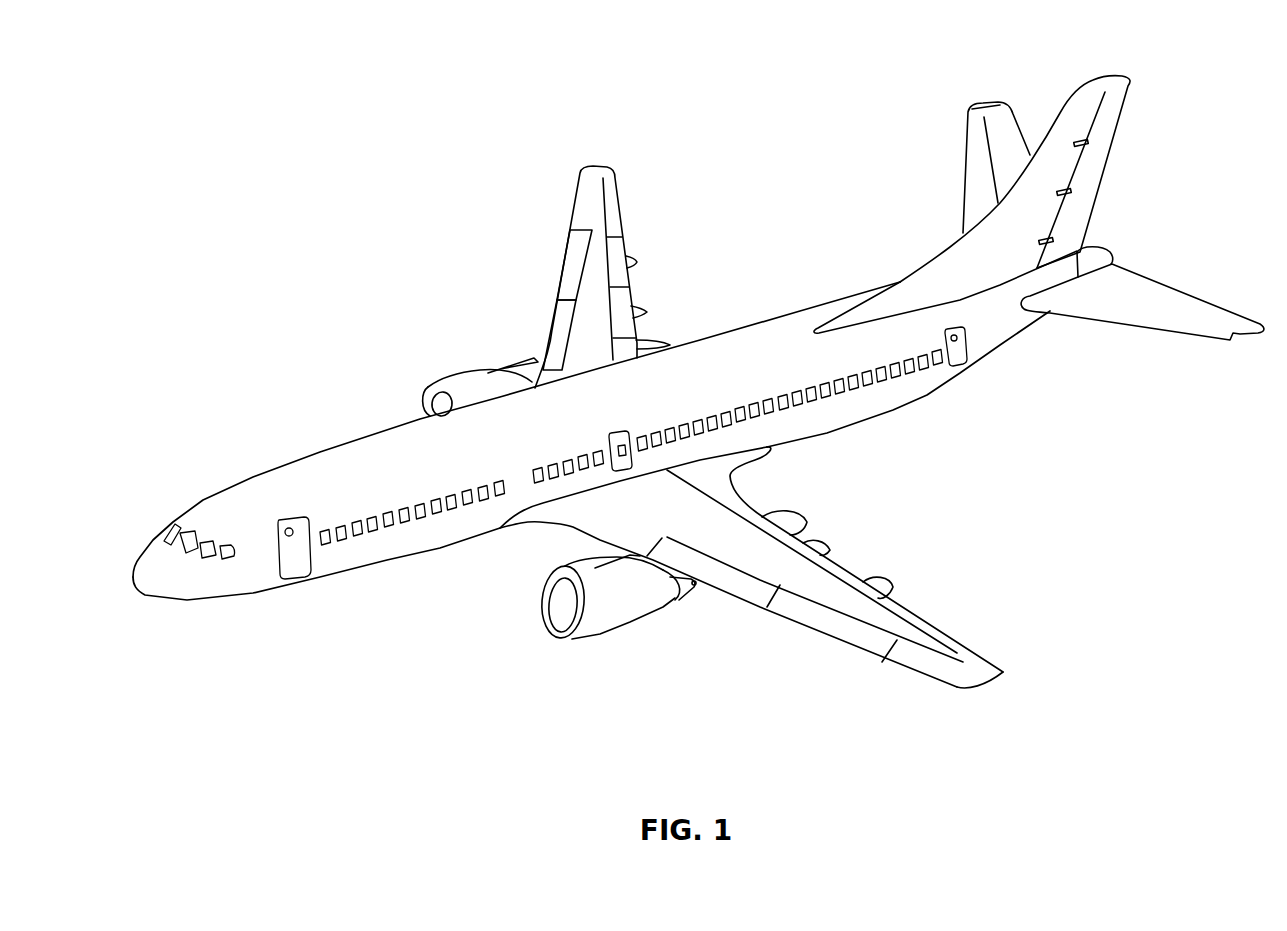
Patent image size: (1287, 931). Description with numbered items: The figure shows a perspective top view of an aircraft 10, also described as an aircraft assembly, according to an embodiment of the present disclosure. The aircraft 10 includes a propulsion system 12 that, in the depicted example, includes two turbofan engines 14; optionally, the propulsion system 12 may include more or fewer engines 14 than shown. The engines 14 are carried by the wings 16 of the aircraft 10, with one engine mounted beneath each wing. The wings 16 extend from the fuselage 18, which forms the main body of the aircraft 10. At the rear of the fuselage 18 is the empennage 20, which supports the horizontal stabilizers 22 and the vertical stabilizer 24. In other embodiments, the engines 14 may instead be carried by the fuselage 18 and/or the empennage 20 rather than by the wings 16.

The aircraft 10 is at (395, 142).
The propulsion system 12 is at (514, 692).
The turbofan engines 14 is at (470, 373).
The wings 16 is at (597, 175).
The fuselage 18 is at (365, 553).
The empennage 20 is at (853, 273).
The horizontal stabilizers 22 is at (997, 113).
The vertical stabilizer 24 is at (1088, 92).